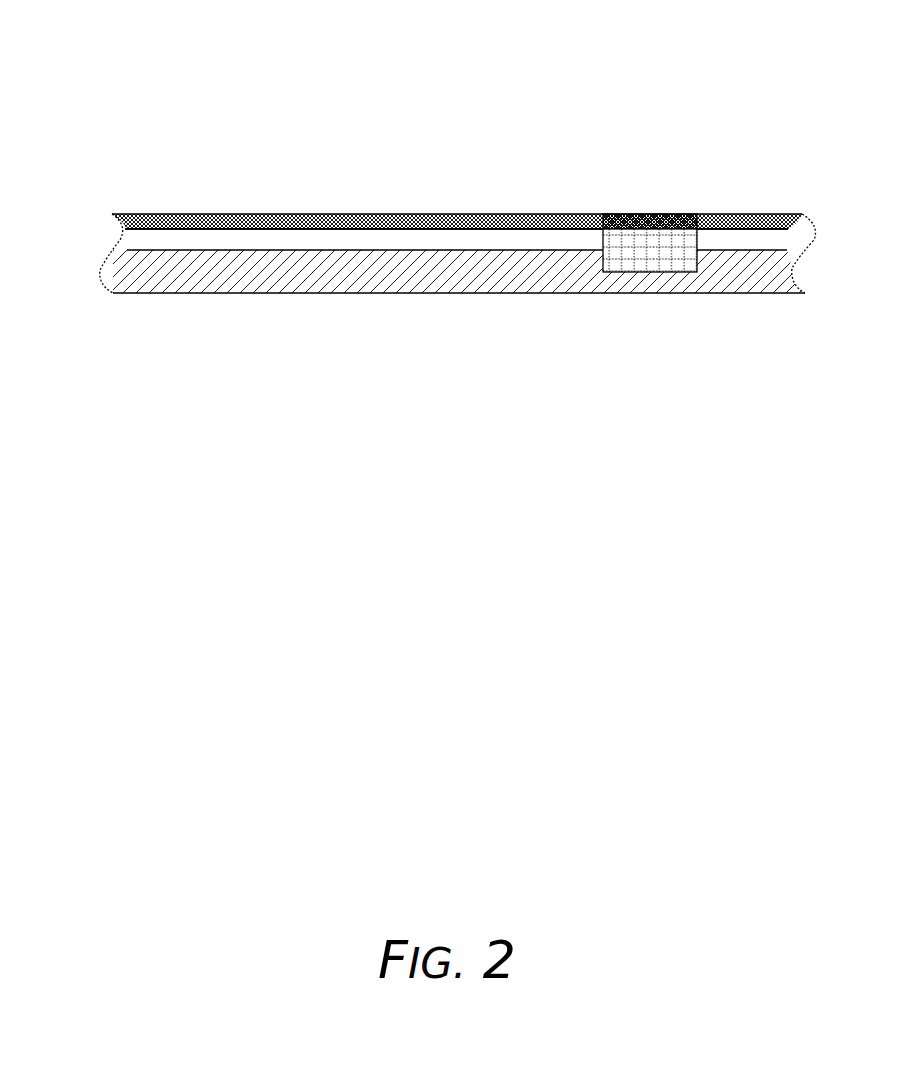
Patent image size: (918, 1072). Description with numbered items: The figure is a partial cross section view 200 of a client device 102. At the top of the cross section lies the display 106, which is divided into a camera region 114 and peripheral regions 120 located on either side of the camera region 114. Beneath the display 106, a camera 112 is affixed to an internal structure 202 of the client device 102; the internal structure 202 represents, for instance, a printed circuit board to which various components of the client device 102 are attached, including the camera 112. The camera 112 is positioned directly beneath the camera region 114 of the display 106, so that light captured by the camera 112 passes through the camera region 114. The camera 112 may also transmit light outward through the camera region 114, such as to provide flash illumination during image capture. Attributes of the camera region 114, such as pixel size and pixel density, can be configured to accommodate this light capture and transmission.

The partial cross section view 200 is at (163, 88).
The client device 102 is at (105, 262).
The display 106 is at (150, 215).
The peripheral regions 120 is at (487, 220).
The camera region 114 is at (652, 222).
The camera 112 is at (640, 260).
The internal structure 202 is at (528, 272).